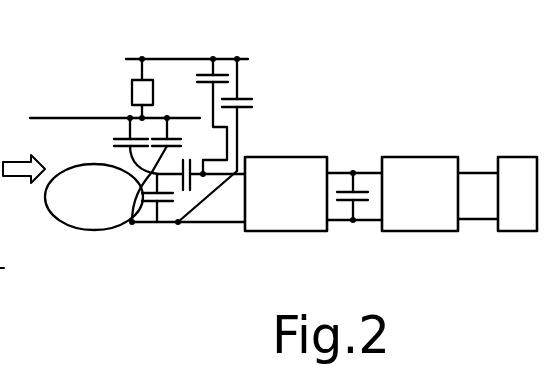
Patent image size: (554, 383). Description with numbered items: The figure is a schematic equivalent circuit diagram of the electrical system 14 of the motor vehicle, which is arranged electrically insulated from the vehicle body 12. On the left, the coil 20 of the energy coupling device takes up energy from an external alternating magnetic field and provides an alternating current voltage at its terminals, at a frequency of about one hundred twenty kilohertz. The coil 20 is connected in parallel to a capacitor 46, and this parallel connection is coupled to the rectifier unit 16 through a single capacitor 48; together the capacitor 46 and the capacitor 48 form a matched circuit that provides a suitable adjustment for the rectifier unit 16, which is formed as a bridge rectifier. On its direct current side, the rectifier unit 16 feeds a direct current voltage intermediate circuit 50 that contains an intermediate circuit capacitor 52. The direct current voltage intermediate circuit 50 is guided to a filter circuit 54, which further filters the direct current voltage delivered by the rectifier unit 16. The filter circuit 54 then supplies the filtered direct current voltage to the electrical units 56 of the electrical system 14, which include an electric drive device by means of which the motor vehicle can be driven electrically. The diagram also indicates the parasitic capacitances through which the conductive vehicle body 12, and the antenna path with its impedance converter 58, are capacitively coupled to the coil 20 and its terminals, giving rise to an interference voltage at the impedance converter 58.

The vehicle body 12 is at (67, 118).
The electrical system 14 is at (323, 90).
The rectifier unit 16 is at (290, 231).
The coil 20 is at (68, 227).
The capacitor 46 is at (162, 223).
The single capacitor 48 is at (180, 224).
The direct current voltage intermediate circuit 50 is at (352, 157).
The intermediate circuit capacitor 52 is at (365, 204).
The filter circuit 54 is at (427, 157).
The electrical units 56 is at (512, 232).
The impedance converter 58 is at (132, 87).